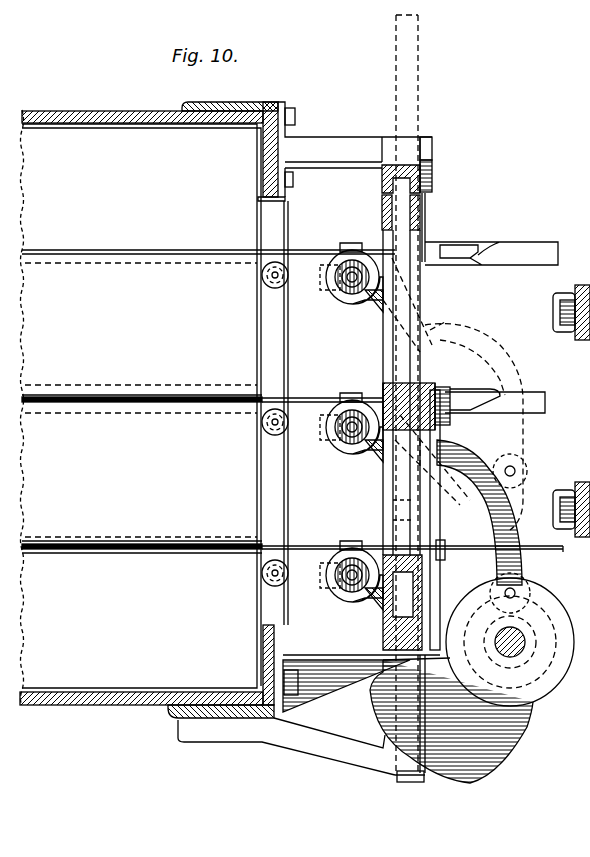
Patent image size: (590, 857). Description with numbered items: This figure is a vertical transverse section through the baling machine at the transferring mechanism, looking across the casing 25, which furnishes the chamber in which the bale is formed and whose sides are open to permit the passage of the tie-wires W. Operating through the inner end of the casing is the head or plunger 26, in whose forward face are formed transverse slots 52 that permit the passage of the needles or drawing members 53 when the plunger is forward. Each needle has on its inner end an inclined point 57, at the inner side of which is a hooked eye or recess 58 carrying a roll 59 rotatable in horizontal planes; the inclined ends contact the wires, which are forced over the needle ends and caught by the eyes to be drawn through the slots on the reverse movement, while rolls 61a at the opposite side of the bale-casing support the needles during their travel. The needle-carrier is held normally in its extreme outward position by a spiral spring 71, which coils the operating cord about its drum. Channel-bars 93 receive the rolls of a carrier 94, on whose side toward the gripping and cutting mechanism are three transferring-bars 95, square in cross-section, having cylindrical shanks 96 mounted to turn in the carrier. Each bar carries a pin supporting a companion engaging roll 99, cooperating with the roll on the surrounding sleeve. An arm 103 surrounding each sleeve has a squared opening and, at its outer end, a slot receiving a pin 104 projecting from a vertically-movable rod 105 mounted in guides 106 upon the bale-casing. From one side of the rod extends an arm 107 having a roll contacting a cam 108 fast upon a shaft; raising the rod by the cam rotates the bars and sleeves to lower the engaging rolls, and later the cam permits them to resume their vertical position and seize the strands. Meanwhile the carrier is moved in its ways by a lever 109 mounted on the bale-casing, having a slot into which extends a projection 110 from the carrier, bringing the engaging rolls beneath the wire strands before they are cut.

The casing 25 is at (146, 706).
The head or plunger 26 is at (142, 406).
The transverse slots 52 is at (131, 402).
The needles or drawing members 53 is at (546, 400).
The inclined point 57 is at (425, 246).
The hooked eye or recess 58 is at (471, 257).
The roll 59 is at (456, 245).
The rolls 61a is at (250, 595).
The channel-bars 93 is at (433, 181).
The carrier 94 is at (383, 350).
The transferring-bars 95 is at (578, 300).
The cylindrical shanks 96 is at (346, 452).
The companion engaging roll 99 is at (350, 392).
The arm 103 is at (364, 307).
The pin 104 is at (430, 335).
The vertically-movable rod 105 is at (406, 783).
The guides 106 is at (385, 745).
The arm 107 is at (497, 460).
The cam 108 is at (523, 732).
The lever 109 is at (400, 510).
The projection 110 is at (449, 416).
The spiral spring 71 is at (520, 642).
The tie-wires W is at (299, 402).